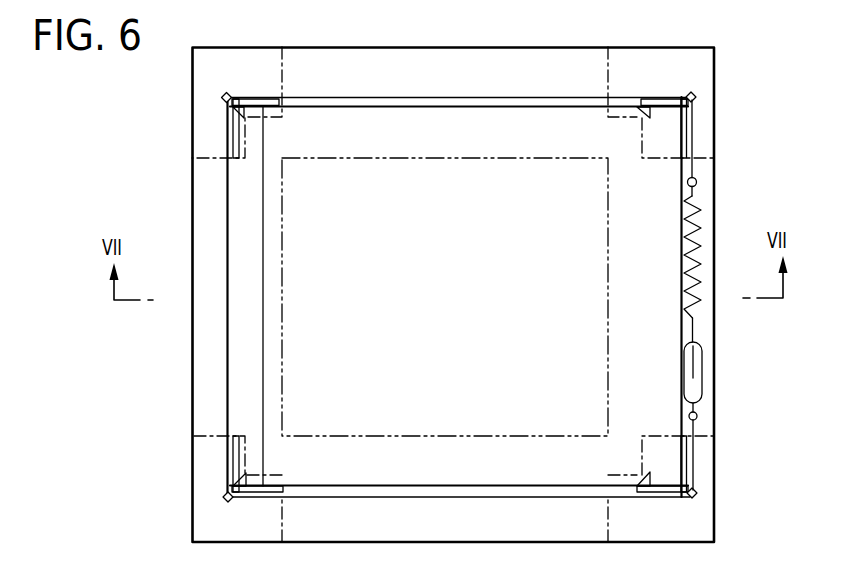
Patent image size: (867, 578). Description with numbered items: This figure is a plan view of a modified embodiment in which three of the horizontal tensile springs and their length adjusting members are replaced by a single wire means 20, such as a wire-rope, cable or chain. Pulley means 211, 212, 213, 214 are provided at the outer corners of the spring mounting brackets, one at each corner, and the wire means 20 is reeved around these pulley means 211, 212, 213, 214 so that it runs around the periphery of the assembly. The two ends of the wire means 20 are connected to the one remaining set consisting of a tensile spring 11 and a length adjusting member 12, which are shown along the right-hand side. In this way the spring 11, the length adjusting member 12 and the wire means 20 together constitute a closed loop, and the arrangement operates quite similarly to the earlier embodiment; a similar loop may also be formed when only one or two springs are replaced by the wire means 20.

The horizontal tensile spring 11 is at (697, 229).
The length adjusting member 12 is at (702, 371).
The wire means 20 is at (228, 313).
The pulley means 211 is at (696, 493).
The pulley means 212 is at (694, 96).
The pulley means 213 is at (227, 93).
The pulley means 214 is at (224, 497).